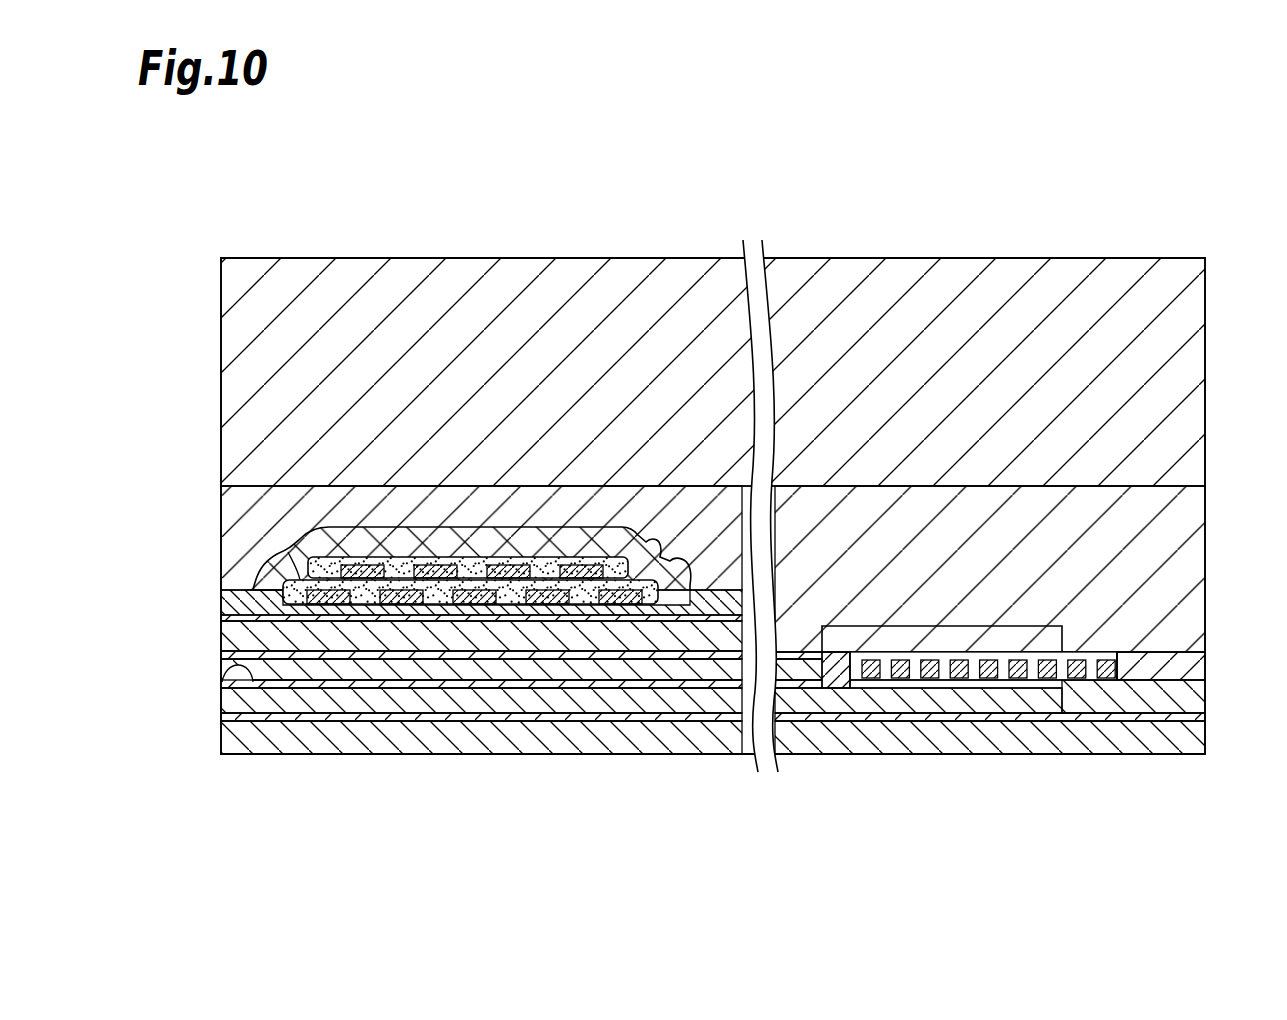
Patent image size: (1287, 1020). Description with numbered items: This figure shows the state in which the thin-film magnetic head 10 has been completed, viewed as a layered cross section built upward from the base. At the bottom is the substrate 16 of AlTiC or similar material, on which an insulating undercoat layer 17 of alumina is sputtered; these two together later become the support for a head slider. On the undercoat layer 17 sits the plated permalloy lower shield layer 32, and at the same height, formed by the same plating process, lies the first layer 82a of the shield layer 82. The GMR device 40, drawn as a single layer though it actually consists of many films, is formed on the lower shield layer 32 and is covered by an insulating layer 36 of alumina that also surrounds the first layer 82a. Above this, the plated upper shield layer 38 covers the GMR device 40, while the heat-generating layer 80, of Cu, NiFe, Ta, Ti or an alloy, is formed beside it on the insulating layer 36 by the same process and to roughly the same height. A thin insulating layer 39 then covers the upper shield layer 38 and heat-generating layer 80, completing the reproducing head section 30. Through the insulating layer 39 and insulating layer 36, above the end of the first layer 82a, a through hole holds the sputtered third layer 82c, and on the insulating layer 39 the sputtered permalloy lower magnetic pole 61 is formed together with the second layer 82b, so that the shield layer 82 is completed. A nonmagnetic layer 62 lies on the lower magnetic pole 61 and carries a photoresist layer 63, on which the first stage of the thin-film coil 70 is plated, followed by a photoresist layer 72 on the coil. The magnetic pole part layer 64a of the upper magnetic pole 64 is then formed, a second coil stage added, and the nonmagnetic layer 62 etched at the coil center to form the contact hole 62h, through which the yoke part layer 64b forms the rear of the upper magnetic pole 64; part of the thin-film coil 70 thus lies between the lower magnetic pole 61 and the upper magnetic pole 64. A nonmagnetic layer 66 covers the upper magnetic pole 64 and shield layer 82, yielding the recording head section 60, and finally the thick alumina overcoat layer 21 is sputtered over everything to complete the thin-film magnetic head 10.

The thin-film magnetic head 10 is at (220, 195).
The substrate 16 is at (221, 737).
The undercoat layer 17 is at (221, 716).
The overcoat layer 21 is at (221, 352).
The reproducing head section 30 is at (676, 710).
The lower shield layer 32 is at (221, 700).
The insulating layer 36 is at (221, 676).
The upper shield layer 38 is at (224, 670).
The insulating layer 39 is at (221, 655).
The GMR device 40 is at (221, 684).
The recording head section 60 is at (386, 428).
The lower magnetic pole 61 is at (221, 636).
The nonmagnetic layer 62 is at (221, 618).
The contact hole 62h is at (716, 605).
The photoresist layer 63 is at (221, 601).
The upper magnetic pole 64 is at (380, 551).
The magnetic pole part layer 64a is at (268, 587).
The yoke part layer 64b is at (277, 558).
The nonmagnetic layer 66 is at (221, 506).
The thin-film coil 70 is at (339, 566).
The photoresist layer 72 is at (305, 582).
The heat-generating layer 80 is at (1117, 670).
The shield layer 82 is at (830, 746).
The first layer 82a is at (865, 761).
The second layer 82b is at (822, 648).
The third layer 82c is at (822, 702).